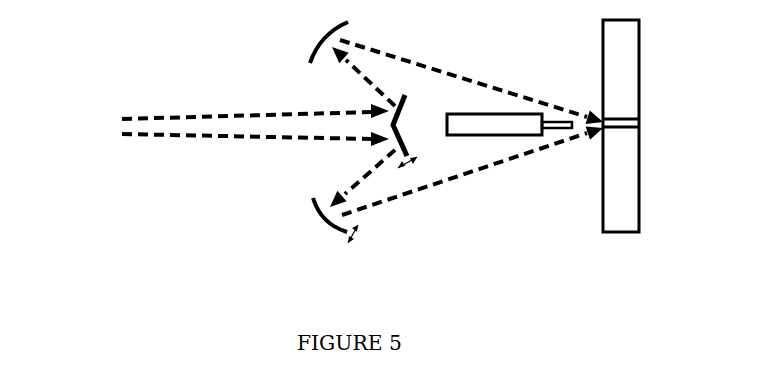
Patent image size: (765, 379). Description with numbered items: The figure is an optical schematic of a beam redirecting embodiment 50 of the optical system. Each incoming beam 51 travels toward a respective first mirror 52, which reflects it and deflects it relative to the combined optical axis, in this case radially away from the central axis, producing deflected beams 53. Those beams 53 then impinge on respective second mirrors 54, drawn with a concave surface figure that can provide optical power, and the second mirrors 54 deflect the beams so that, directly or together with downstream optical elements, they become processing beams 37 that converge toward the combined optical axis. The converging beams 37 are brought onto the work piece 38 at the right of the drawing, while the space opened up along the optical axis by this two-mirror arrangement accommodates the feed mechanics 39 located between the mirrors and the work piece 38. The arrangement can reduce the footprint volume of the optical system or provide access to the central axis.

The beam redirecting embodiment 50 is at (110, 70).
The beam 51 is at (297, 147).
The first mirror 52 is at (397, 97).
The deflected beam 53 is at (338, 73).
The second mirror 54 is at (320, 231).
The processing beam 37 is at (478, 64).
The feed mechanics 39 is at (495, 123).
The work piece 38 is at (617, 215).